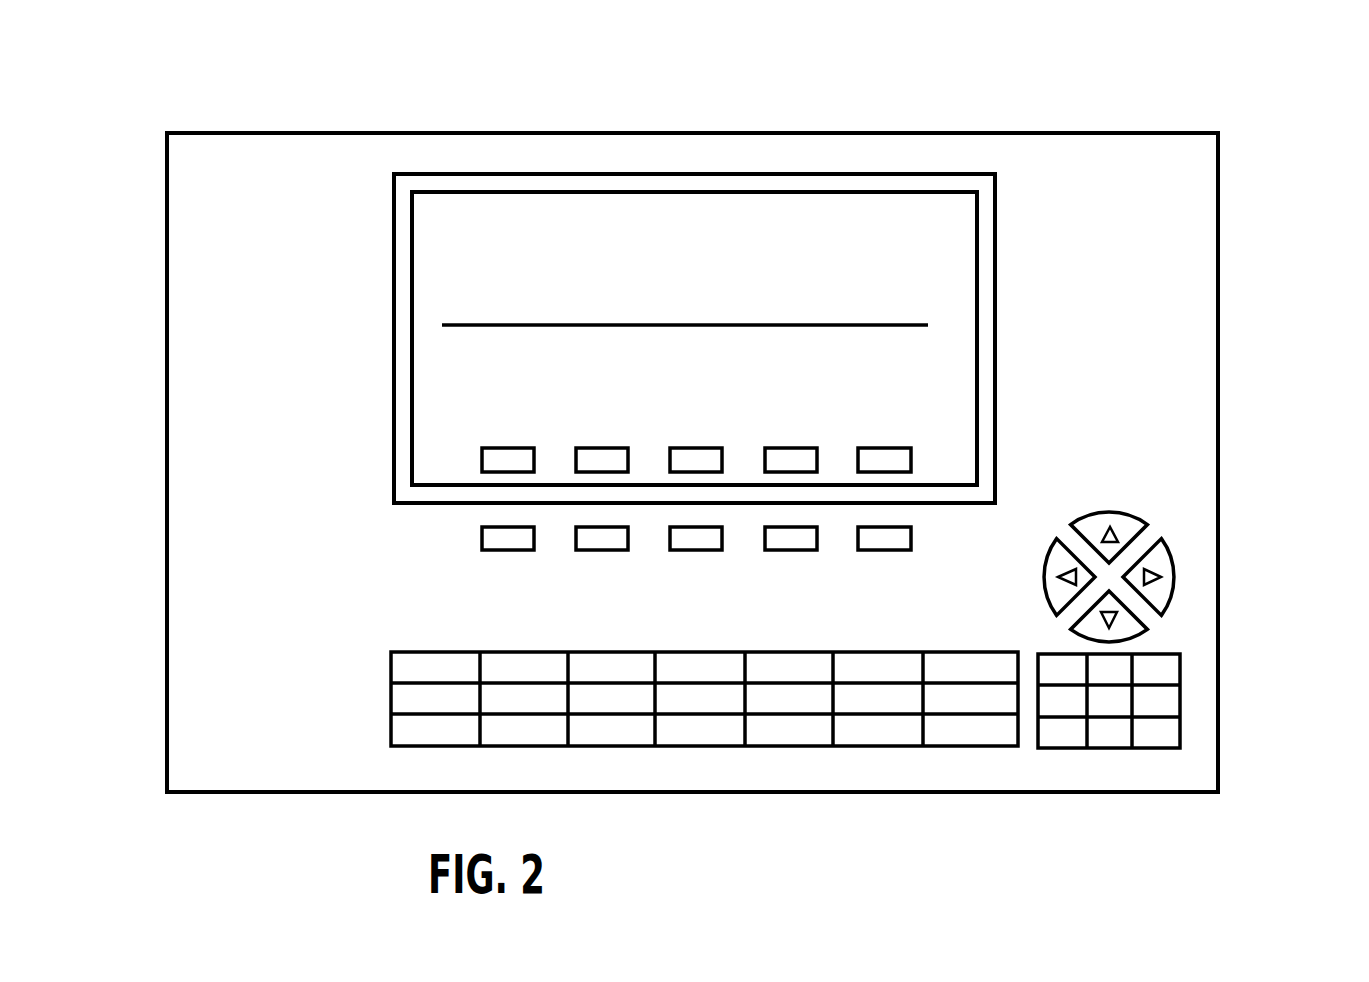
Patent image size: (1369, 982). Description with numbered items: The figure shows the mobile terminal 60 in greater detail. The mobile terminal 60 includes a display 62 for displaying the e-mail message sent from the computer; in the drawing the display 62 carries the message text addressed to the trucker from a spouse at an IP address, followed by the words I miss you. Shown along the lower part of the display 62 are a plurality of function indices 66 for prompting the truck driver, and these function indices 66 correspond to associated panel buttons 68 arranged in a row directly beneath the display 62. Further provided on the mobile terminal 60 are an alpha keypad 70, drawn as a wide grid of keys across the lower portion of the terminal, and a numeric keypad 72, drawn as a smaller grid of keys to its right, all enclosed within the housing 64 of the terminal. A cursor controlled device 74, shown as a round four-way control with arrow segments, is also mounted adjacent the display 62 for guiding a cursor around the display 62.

The mobile terminal 60 is at (222, 73).
The display 62 is at (893, 217).
The housing 64 is at (1193, 240).
The function indices 66 is at (533, 448).
The panel buttons 68 is at (534, 548).
The alpha keypad 70 is at (696, 746).
The numeric keypad 72 is at (1108, 748).
The cursor controlled device 74 is at (1172, 563).